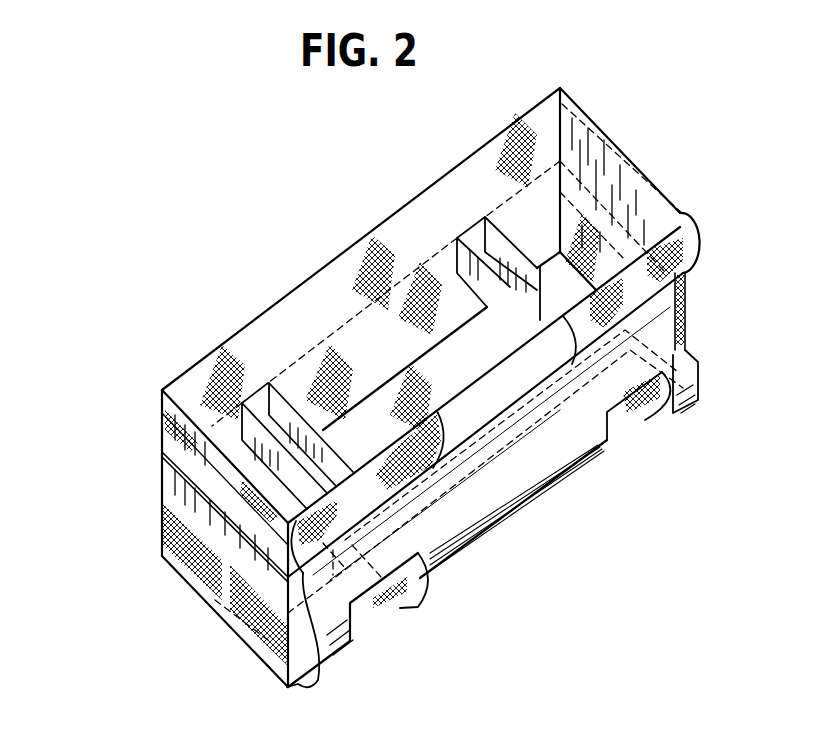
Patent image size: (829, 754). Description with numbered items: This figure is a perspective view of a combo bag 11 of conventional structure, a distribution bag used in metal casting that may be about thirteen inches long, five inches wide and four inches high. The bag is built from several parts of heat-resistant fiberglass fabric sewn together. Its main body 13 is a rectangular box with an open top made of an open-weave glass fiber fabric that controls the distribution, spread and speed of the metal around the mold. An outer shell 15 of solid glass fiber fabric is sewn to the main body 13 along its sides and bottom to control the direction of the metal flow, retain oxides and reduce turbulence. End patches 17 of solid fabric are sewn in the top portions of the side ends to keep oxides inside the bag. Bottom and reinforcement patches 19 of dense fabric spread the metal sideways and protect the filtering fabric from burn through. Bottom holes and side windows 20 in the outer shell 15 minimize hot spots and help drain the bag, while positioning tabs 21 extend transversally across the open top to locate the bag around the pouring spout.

The combo bag 11 is at (162, 340).
The main body 13 is at (596, 124).
The outer shell 15 is at (563, 497).
The end patches 17 is at (607, 227).
The bottom and reinforcement patches 19 is at (452, 520).
The bottom holes and side windows 20 is at (374, 597).
The positioning tabs 21 is at (262, 402).